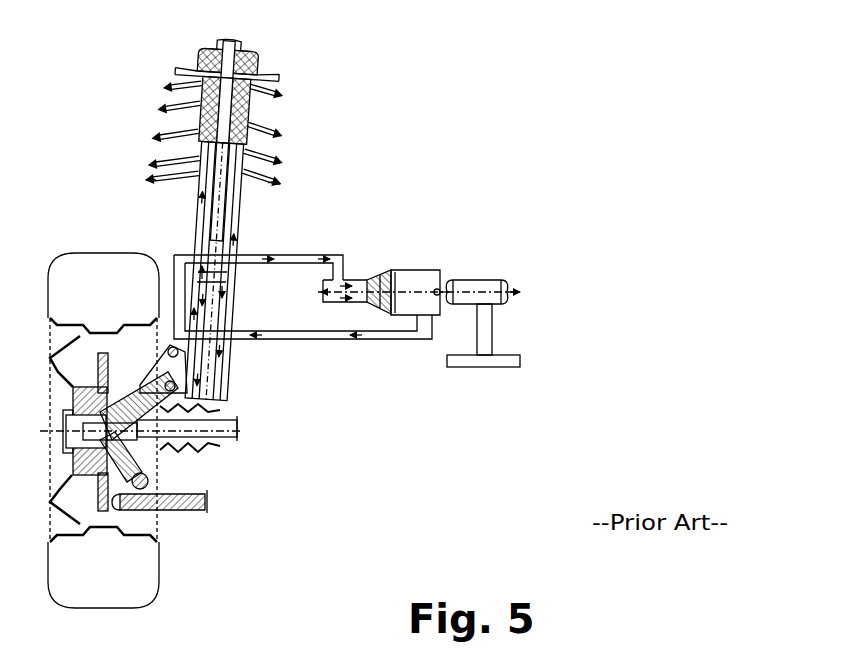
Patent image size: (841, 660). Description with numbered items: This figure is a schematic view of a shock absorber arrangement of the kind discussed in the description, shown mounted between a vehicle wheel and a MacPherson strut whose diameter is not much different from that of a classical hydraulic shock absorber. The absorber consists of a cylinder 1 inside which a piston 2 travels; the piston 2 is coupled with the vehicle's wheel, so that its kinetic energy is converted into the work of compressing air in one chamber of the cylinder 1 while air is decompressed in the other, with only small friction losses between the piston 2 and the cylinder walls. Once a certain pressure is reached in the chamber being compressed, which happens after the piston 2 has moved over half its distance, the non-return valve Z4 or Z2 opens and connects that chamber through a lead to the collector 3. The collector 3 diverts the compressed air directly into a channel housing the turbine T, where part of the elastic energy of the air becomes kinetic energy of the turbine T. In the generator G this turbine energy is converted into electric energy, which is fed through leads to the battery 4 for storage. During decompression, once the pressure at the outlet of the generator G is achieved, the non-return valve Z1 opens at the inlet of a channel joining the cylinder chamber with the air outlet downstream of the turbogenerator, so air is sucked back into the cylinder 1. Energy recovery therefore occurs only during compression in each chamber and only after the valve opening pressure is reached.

The cylinder 1 is at (237, 245).
The piston 2 is at (223, 282).
The collector 3 is at (347, 301).
The battery 4 is at (447, 361).
The non-return valve Z1 is at (175, 132).
The non-return valve Z2 is at (264, 134).
The non-return valve Z4 is at (215, 386).
The turbine T is at (408, 275).
The generator G is at (483, 295).